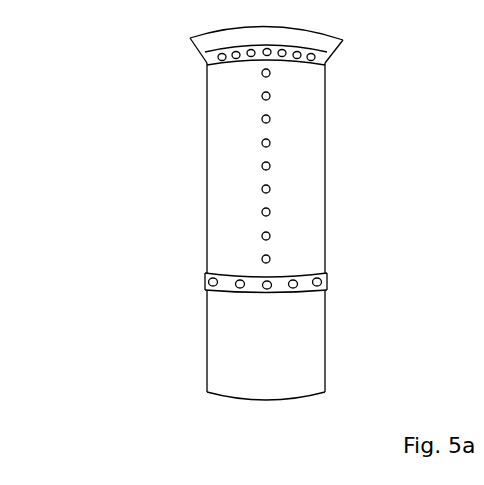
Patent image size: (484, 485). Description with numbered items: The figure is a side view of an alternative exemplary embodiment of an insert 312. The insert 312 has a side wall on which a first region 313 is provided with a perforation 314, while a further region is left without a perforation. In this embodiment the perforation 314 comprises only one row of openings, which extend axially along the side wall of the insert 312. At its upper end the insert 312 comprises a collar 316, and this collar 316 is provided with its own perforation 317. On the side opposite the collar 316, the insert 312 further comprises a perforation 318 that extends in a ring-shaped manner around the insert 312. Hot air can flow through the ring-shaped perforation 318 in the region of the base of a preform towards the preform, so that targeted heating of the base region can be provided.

The insert 312 is at (116, 379).
The first region 313 is at (269, 146).
The perforation 314 is at (269, 213).
The collar 316 is at (205, 40).
The perforation 317 is at (320, 51).
The perforation 318 is at (208, 278).